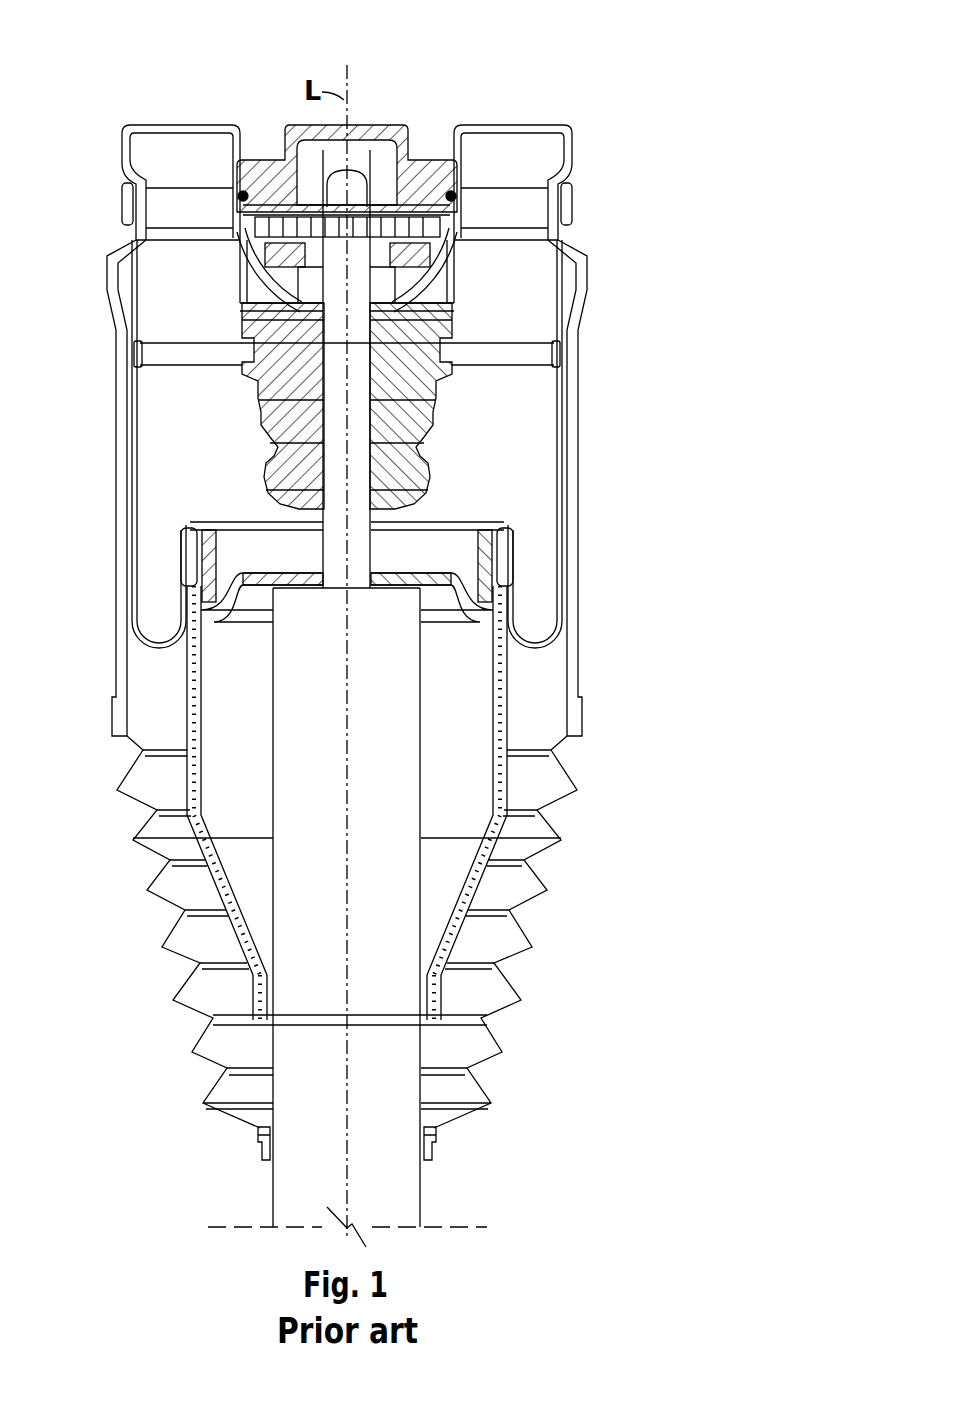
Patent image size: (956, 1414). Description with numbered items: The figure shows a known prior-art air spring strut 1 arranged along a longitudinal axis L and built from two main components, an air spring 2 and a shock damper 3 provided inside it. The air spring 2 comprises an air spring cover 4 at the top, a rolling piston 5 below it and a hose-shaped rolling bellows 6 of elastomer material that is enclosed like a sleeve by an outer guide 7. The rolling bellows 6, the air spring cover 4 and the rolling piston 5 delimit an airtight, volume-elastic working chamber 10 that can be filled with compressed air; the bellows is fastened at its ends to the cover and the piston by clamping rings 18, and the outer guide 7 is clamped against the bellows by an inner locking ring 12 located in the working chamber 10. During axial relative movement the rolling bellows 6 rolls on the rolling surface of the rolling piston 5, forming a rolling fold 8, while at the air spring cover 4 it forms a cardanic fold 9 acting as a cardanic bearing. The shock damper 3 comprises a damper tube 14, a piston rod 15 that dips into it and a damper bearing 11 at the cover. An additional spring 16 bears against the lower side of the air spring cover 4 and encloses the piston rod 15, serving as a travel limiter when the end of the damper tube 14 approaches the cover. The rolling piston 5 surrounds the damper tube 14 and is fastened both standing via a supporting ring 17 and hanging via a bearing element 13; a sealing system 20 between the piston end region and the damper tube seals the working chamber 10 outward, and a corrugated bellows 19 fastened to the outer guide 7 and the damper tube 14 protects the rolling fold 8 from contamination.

The air spring strut 1 is at (150, 66).
The air spring 2 is at (382, 495).
The shock damper 3 is at (351, 917).
The air spring cover 4 is at (133, 128).
The rolling piston 5 is at (199, 706).
The rolling bellows 6 is at (137, 458).
The outer guide 7 is at (115, 418).
The rolling fold 8 is at (147, 634).
The cardanic fold 9 is at (604, 265).
The working chamber 10 is at (231, 493).
The damper bearing 11 is at (386, 208).
The inner locking ring 12 is at (542, 366).
The bearing element 13 is at (416, 598).
The damper tube 14 is at (400, 1188).
The piston rod 15 is at (370, 558).
The additional spring 16 is at (420, 470).
The supporting ring 17 is at (385, 1028).
The clamping rings 18 is at (572, 207).
The corrugated bellows 19 is at (132, 802).
The sealing system 20 is at (268, 990).